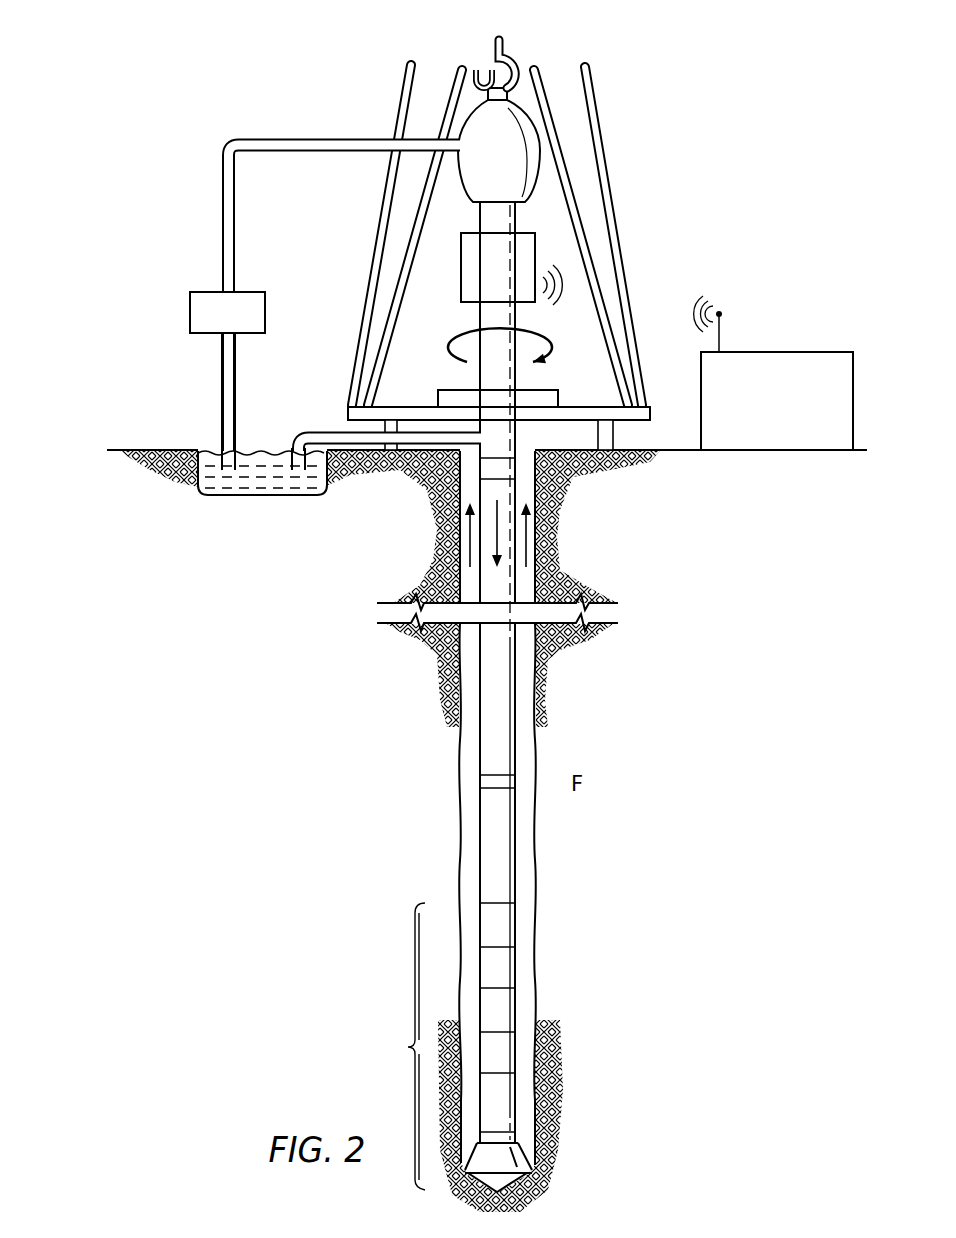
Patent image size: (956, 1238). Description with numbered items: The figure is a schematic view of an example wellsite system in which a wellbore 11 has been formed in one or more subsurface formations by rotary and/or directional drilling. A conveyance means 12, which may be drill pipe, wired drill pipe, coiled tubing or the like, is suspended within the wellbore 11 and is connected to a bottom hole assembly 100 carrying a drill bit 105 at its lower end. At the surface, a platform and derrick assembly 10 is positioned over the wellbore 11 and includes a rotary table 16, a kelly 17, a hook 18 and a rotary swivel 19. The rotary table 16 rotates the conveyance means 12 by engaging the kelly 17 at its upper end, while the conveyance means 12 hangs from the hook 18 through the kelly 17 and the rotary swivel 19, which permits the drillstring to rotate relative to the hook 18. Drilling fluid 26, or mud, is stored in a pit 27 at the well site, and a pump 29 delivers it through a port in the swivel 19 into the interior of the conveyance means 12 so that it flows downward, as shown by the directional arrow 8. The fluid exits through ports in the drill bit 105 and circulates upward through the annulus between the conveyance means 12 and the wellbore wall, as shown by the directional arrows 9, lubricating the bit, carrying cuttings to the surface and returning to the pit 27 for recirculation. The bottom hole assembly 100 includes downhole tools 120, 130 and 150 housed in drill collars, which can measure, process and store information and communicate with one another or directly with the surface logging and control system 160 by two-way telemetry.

The directional arrow 8 is at (499, 525).
The directional arrows 9 is at (468, 545).
The platform and derrick assembly 10 is at (676, 157).
The wellbore 11 is at (545, 484).
The conveyance means 12 is at (522, 436).
The rotary table 16 is at (447, 388).
The kelly 17 is at (480, 318).
The hook 18 is at (494, 45).
The rotary swivel 19 is at (460, 190).
The drilling fluid 26 is at (268, 491).
The pit 27 is at (267, 442).
The pump 29 is at (190, 310).
The bottom hole assembly 100 is at (395, 1046).
The drill bit 105 is at (530, 1156).
The downhole tool 120 is at (517, 967).
The downhole tool 130 is at (517, 1009).
The downhole tool 150 is at (517, 1103).
The logging and control system 160 is at (777, 352).